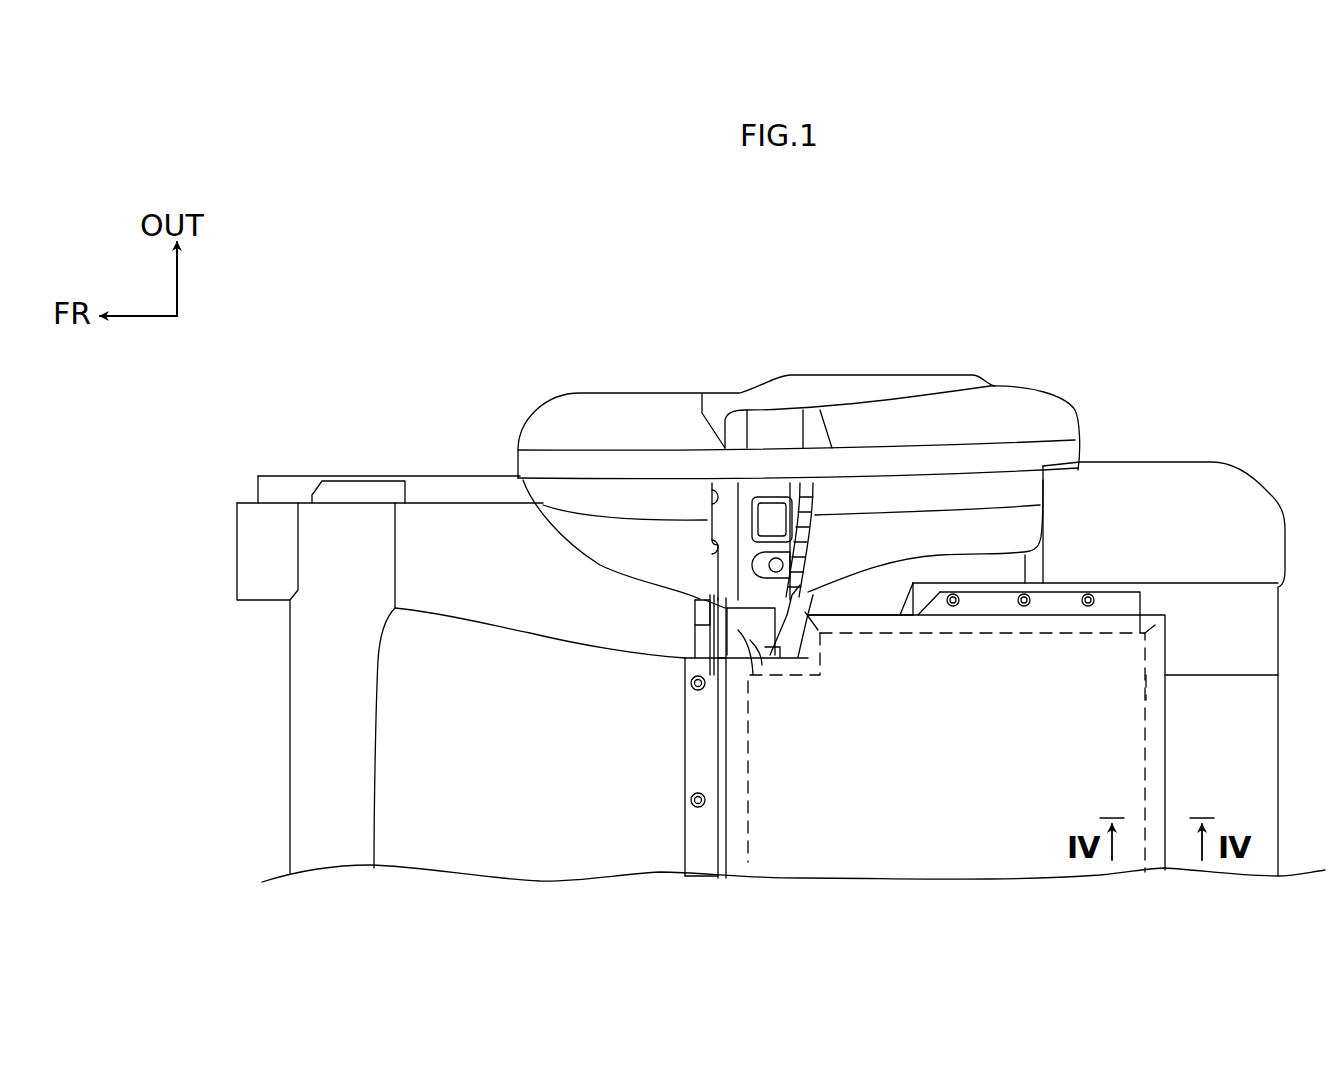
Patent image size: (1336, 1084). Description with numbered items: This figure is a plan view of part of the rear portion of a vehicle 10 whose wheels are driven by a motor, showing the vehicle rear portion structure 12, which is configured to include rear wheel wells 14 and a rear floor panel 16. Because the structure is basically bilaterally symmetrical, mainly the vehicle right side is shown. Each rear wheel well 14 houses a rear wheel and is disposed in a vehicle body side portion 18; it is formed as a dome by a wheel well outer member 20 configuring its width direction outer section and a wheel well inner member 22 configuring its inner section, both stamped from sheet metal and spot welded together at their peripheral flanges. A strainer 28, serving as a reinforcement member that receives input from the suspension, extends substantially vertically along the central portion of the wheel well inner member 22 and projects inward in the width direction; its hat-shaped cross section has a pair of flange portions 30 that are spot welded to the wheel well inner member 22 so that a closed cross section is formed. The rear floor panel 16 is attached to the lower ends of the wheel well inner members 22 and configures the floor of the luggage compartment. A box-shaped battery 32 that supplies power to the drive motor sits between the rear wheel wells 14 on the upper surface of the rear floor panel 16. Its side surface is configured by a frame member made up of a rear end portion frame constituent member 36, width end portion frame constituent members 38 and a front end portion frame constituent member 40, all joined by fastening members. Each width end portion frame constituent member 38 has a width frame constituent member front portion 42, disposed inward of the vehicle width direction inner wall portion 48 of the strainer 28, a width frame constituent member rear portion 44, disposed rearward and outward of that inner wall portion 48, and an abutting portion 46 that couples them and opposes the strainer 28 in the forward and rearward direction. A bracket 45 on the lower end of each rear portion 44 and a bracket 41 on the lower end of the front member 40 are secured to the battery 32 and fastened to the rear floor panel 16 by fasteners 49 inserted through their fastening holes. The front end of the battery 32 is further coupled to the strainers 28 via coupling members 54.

The vehicle 10 is at (921, 282).
The vehicle rear portion structure 12 is at (1146, 343).
The rear wheel well 14 is at (1032, 392).
The rear floor panel 16 is at (1228, 480).
The vehicle body side portion 18 is at (458, 455).
The wheel well outer member 20 is at (807, 383).
The wheel well inner member 22 is at (820, 522).
The strainer 28 is at (700, 622).
The flange portion 30 is at (700, 647).
The battery 32 is at (1168, 780).
The rear end portion frame constituent member 36 is at (1155, 741).
The width end portion frame constituent member 38 is at (1130, 628).
The front end portion frame constituent member 40 is at (735, 752).
The bracket 41 is at (700, 848).
The width frame constituent member front portion 42 is at (760, 665).
The width frame constituent member rear portion 44 is at (1008, 635).
The bracket 45 is at (1049, 600).
The abutting portion 46 is at (812, 655).
The vehicle width direction inner wall portion 48 is at (745, 640).
The fastener 49 is at (1023, 596).
The coupling member 54 is at (695, 608).